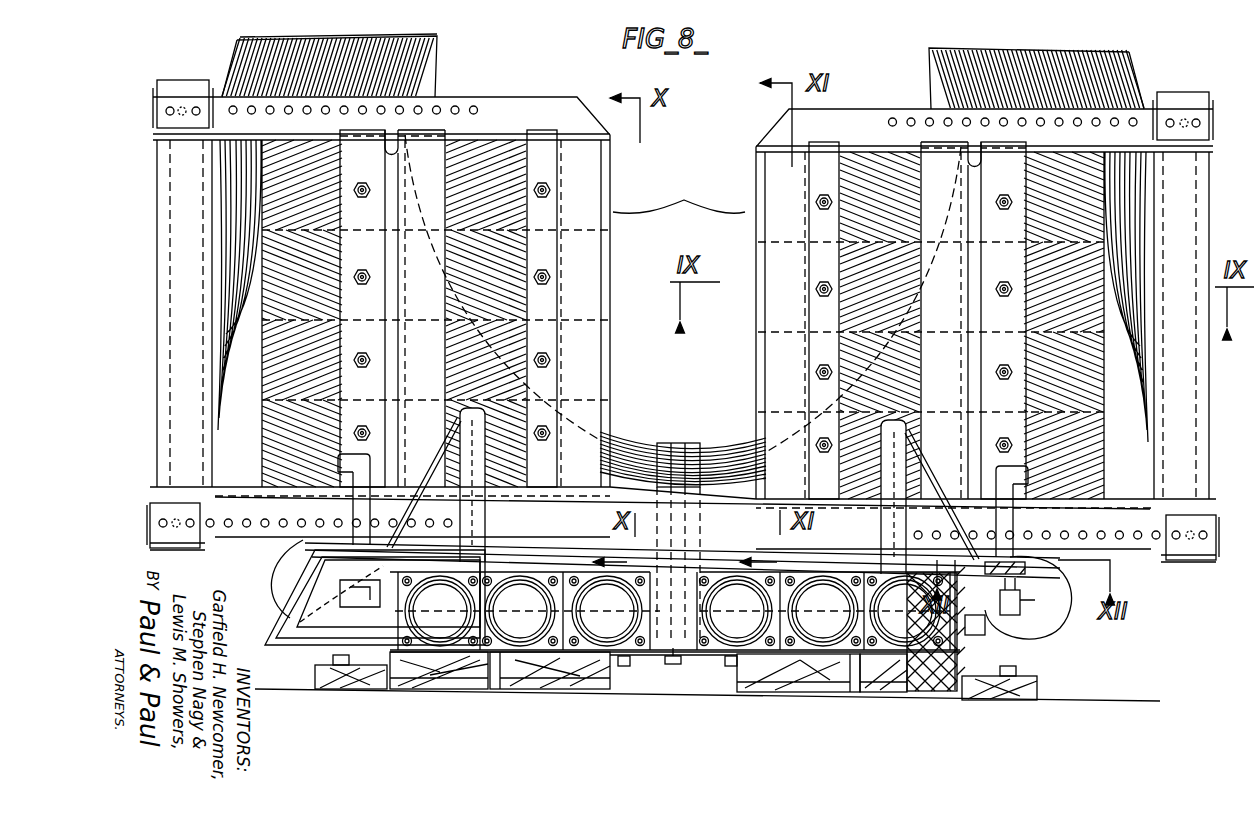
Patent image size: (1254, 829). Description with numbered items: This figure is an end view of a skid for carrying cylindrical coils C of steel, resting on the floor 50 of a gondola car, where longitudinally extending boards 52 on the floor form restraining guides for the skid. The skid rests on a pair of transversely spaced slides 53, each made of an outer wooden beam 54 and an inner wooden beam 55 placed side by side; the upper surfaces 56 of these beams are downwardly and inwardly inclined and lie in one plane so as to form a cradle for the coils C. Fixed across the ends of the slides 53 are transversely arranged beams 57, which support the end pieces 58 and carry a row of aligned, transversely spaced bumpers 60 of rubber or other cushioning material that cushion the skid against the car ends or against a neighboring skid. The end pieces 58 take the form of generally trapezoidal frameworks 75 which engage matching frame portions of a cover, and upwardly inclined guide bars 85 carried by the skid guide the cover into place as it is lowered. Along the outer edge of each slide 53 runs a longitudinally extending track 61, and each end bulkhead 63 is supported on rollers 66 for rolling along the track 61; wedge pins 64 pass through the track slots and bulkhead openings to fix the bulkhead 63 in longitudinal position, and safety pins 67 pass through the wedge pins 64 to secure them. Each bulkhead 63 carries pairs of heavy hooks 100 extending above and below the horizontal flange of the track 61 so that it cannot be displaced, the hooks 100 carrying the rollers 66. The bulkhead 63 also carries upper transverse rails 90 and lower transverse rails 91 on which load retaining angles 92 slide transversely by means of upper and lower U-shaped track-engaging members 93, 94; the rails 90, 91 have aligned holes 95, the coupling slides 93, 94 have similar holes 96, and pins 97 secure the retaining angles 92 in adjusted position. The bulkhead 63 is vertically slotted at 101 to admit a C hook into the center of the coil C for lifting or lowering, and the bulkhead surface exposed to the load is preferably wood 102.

The floor 50 is at (1142, 699).
The longitudinally extending boards 52 is at (316, 666).
The slide 53 is at (392, 716).
The outer beam 54 is at (443, 676).
The inner beam 55 is at (556, 676).
The upper surfaces 56 is at (630, 660).
The transversely arranged beams 57 is at (673, 656).
The end pieces 58 is at (259, 600).
The bumpers 60 is at (520, 595).
The track 61 is at (353, 605).
The bulkhead 63 is at (500, 84).
The wedge pins 64 is at (374, 467).
The rollers 66 is at (1023, 565).
The safety pins 67 is at (1018, 602).
The trapezoidal frameworks 75 is at (313, 569).
The guide bar 85 is at (478, 412).
The upper transverse rails 90 is at (575, 115).
The lower transverse rails 91 is at (240, 487).
The load retaining angles 92 is at (224, 350).
The upper track-engaging member 93 is at (187, 80).
The lower track-engaging member 94 is at (152, 506).
The holes 95 is at (473, 106).
The holes 96 is at (196, 116).
The pins 97 is at (201, 104).
The hooks 100 is at (273, 548).
The slot 101 is at (683, 406).
The wood 102 is at (485, 230).
The cylindrical coils C is at (440, 30).